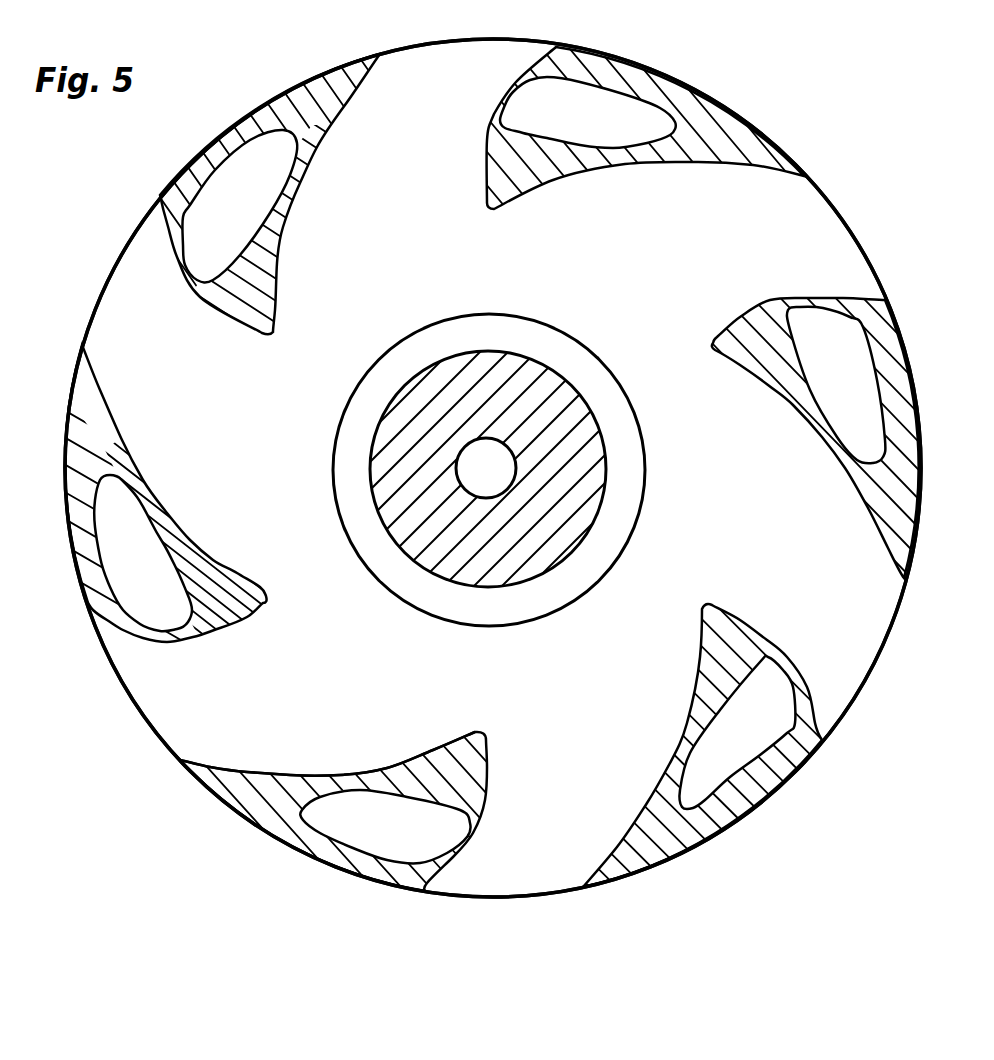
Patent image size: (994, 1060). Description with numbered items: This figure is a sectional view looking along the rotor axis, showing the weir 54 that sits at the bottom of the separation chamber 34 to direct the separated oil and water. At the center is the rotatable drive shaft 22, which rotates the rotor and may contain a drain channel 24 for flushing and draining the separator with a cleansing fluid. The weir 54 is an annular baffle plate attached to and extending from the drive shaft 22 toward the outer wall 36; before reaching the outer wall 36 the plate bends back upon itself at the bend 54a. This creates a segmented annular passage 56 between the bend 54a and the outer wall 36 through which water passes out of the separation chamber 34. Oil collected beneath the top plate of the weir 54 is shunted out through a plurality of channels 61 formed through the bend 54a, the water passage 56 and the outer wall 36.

The drive shaft 22 is at (519, 425).
The drain channel 24 is at (470, 463).
The separation chamber 34 is at (620, 508).
The outer wall 36 is at (332, 855).
The weir 54 is at (609, 673).
The bend 54a is at (410, 792).
The segmented annular passage 56 is at (137, 532).
The channels 61 is at (175, 711).